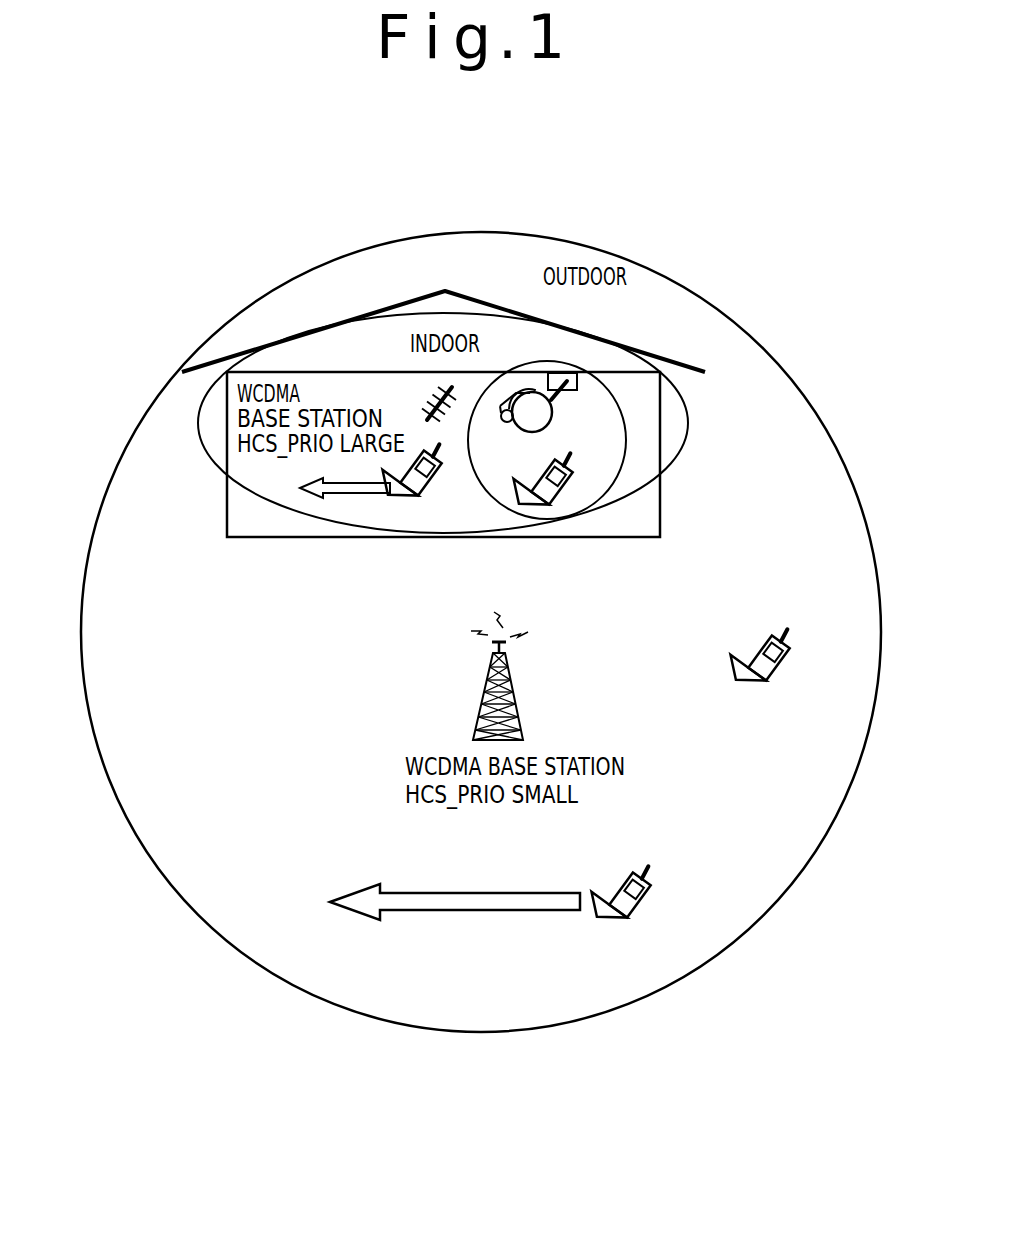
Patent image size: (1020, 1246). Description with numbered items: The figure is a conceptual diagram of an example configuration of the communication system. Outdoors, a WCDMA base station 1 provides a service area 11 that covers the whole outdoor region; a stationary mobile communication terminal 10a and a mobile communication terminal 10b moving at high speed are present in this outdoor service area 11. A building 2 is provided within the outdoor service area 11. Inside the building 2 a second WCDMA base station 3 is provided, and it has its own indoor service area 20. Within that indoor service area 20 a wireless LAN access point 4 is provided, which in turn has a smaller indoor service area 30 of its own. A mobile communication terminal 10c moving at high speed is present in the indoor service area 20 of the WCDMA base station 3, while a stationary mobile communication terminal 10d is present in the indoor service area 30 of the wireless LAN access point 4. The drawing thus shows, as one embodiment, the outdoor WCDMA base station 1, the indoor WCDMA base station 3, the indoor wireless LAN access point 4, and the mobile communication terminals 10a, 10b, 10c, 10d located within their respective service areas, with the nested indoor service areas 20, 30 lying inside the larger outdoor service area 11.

The WCDMA base station 1 is at (512, 697).
The building 2 is at (402, 306).
The WCDMA base station 3 is at (443, 380).
The wireless LAN access point 4 is at (555, 421).
The mobile communication terminal 10a is at (742, 654).
The mobile communication terminal 10b is at (640, 901).
The mobile communication terminal 10c is at (435, 492).
The mobile communication terminal 10d is at (565, 500).
The service area 11 is at (583, 243).
The service area 20 is at (210, 458).
The service area 30 is at (625, 418).